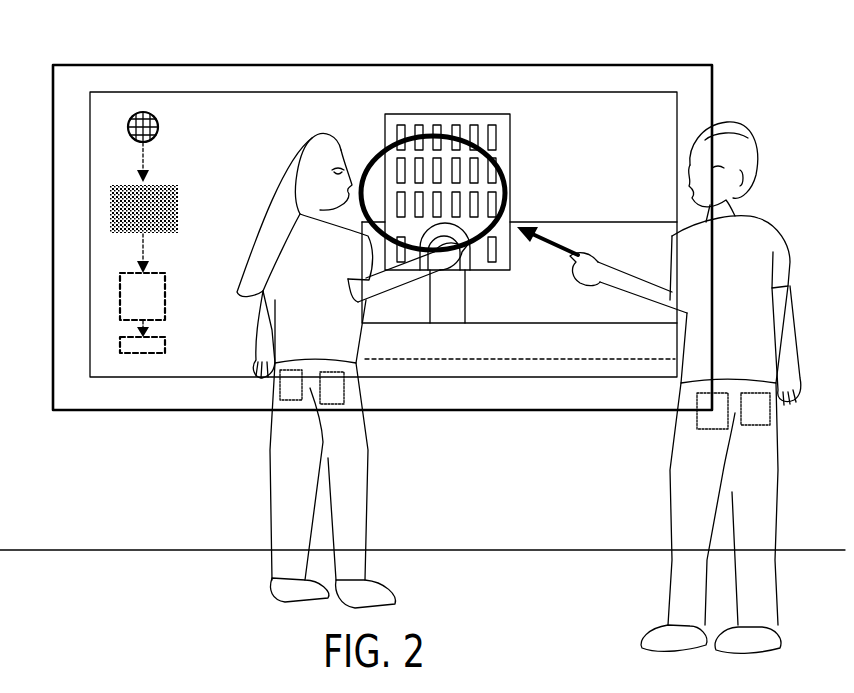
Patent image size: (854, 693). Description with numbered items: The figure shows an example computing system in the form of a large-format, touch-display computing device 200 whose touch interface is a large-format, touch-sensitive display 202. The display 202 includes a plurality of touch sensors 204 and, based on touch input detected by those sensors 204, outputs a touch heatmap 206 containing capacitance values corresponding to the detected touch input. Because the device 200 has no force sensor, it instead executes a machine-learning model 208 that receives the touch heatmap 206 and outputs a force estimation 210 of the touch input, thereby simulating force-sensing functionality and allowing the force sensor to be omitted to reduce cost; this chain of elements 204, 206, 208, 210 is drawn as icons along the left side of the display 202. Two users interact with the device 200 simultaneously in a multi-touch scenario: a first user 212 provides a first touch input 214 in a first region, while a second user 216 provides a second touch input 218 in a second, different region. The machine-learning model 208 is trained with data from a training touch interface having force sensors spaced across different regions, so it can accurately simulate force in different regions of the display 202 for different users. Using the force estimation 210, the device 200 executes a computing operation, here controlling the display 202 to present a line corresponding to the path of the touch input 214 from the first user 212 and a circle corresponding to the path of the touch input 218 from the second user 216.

The large-format, touch-display computing device 200 is at (120, 64).
The large-format, touch-sensitive display 202 is at (146, 92).
The touch sensors 204 is at (158, 126).
The touch heatmap 206 is at (178, 212).
The machine-learning model 208 is at (165, 297).
The force estimation 210 is at (165, 346).
The first user 212 is at (750, 230).
The first touch input 214 is at (560, 243).
The second user 216 is at (295, 186).
The second touch input 218 is at (466, 250).